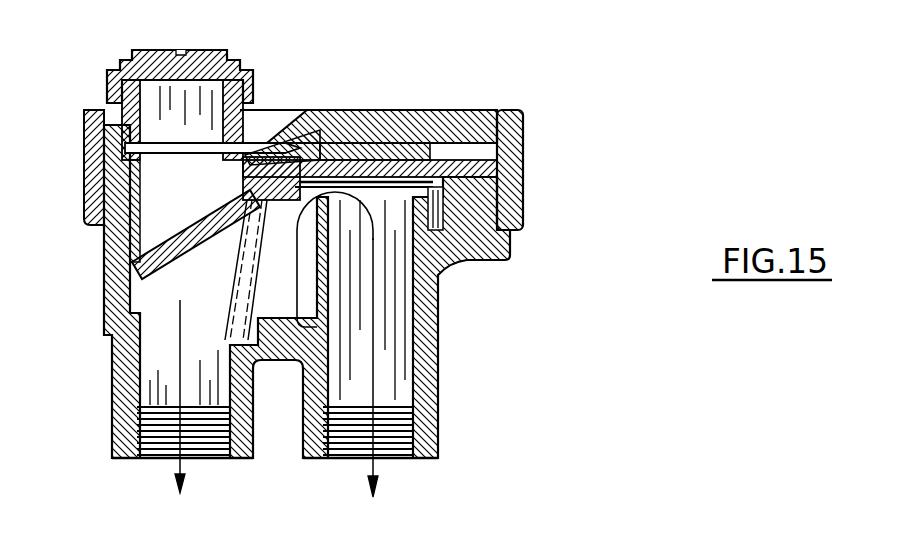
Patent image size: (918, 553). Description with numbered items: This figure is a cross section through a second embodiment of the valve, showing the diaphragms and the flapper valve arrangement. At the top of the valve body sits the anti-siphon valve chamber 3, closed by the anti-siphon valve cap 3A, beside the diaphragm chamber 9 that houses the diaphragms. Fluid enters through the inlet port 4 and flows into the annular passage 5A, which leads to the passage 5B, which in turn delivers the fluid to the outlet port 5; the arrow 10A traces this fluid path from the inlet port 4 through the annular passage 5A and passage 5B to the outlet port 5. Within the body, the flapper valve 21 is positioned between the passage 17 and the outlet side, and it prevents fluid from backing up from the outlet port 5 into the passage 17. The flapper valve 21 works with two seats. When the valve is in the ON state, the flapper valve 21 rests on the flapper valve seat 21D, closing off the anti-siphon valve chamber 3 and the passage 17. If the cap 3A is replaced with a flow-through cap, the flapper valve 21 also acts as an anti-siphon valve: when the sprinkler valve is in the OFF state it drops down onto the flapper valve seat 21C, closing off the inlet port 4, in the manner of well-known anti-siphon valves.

The anti-siphon valve cap 3A is at (217, 52).
The passage 17 is at (257, 127).
The diaphragm chamber 9 is at (375, 110).
The anti-siphon valve chamber 3 is at (167, 193).
The flapper valve seat 21D is at (104, 236).
The flapper valve 21 is at (297, 267).
The outlet port 5 is at (152, 460).
The arrow 10A is at (173, 470).
The flapper valve seat 21C is at (262, 362).
The passage 5B is at (282, 363).
The inlet port 4 is at (385, 462).
The annular passage 5A is at (447, 262).